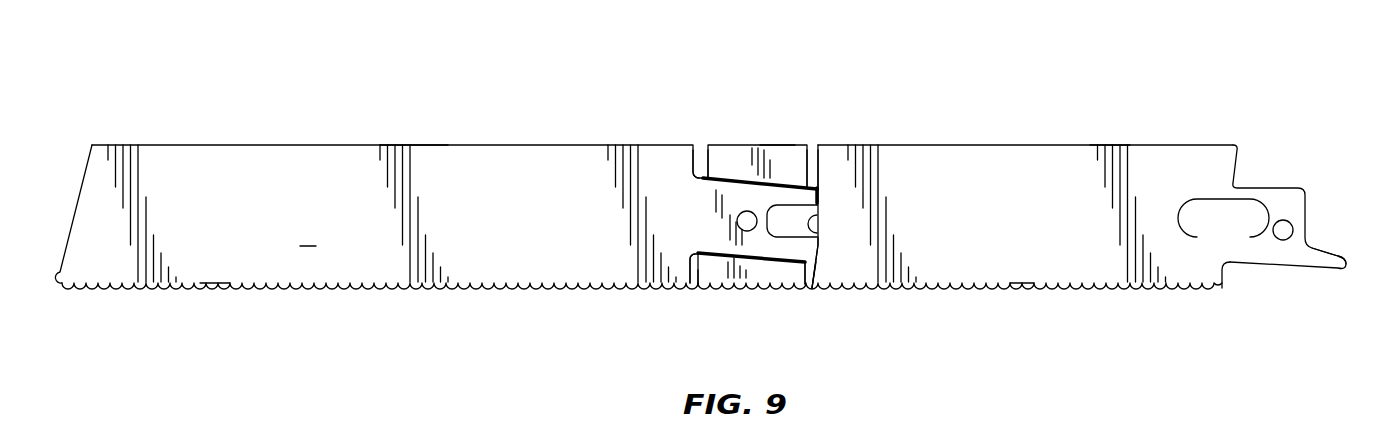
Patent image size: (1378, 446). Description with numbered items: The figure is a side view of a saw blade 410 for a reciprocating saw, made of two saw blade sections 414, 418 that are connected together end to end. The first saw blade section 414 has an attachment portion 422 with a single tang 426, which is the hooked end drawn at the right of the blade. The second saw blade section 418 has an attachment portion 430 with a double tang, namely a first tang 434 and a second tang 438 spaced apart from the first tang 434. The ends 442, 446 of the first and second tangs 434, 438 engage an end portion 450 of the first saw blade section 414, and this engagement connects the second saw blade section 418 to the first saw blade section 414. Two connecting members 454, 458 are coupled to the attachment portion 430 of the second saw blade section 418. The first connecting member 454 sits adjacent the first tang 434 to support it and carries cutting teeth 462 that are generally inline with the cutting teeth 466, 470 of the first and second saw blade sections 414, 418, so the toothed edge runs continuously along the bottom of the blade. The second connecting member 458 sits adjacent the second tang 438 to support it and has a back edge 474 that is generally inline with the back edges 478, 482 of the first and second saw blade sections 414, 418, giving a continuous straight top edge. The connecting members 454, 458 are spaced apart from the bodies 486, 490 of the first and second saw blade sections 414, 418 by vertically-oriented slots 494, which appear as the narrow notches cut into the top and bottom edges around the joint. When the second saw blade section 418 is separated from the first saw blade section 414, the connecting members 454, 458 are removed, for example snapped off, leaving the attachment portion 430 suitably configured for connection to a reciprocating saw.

The saw blade 410 is at (966, 68).
The first saw blade section 414 is at (968, 173).
The second saw blade section 418 is at (258, 165).
The attachment portion 422 is at (1287, 205).
The single tang 426 is at (1332, 263).
The attachment portion 430 is at (744, 197).
The first tang 434 is at (806, 251).
The second tang 438 is at (808, 197).
The end of first tang 442 is at (817, 243).
The end of second tang 446 is at (820, 197).
The end portion 450 is at (815, 253).
The first connecting member 454 is at (732, 273).
The second connecting member 458 is at (720, 152).
The cutting teeth 462 is at (712, 289).
The cutting teeth 466 is at (1115, 290).
The cutting teeth 470 is at (217, 287).
The back edge 474 is at (777, 143).
The back edge 478 is at (1088, 145).
The back edge 482 is at (443, 145).
The body 486 is at (1023, 253).
The body 490 is at (308, 245).
The vertically-oriented slots 494 is at (702, 158).